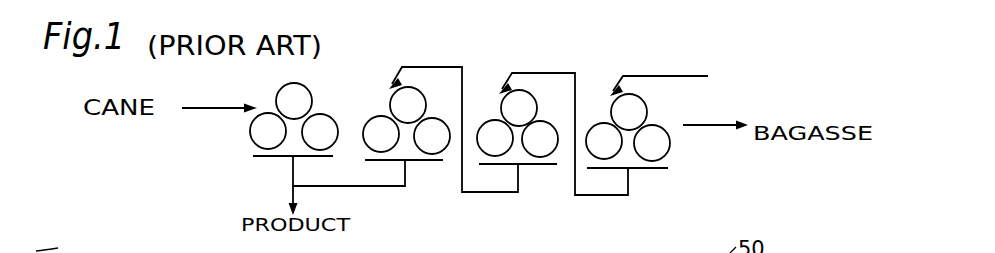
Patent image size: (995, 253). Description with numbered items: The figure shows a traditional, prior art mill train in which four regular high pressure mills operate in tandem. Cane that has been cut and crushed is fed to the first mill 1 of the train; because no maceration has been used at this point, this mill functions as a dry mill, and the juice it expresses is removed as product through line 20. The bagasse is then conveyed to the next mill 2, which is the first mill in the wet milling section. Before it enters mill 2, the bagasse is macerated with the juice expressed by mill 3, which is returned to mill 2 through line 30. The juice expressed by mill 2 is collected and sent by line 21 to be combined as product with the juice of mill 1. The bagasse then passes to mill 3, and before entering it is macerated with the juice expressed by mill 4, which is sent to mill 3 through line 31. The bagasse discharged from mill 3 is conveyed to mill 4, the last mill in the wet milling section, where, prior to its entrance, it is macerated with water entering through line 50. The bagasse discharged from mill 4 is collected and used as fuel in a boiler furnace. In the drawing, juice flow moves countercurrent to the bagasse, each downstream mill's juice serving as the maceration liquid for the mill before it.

The first mill 1 is at (289, 112).
The mill 2 is at (402, 116).
The mill 3 is at (513, 119).
The mill 4 is at (623, 123).
The line 20 is at (292, 196).
The line 21 is at (390, 187).
The line 30 is at (508, 193).
The line 31 is at (589, 140).
The line 50 is at (660, 74).